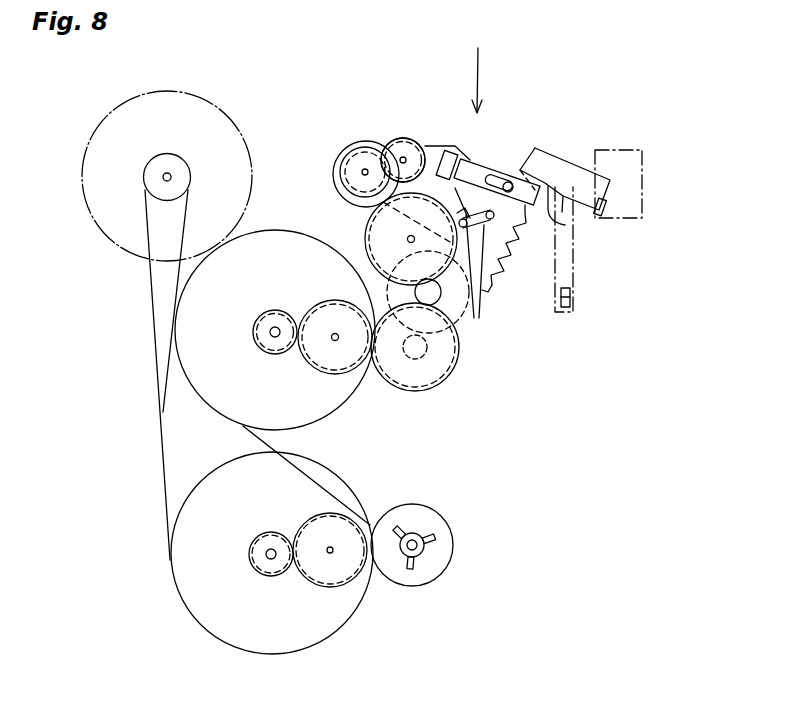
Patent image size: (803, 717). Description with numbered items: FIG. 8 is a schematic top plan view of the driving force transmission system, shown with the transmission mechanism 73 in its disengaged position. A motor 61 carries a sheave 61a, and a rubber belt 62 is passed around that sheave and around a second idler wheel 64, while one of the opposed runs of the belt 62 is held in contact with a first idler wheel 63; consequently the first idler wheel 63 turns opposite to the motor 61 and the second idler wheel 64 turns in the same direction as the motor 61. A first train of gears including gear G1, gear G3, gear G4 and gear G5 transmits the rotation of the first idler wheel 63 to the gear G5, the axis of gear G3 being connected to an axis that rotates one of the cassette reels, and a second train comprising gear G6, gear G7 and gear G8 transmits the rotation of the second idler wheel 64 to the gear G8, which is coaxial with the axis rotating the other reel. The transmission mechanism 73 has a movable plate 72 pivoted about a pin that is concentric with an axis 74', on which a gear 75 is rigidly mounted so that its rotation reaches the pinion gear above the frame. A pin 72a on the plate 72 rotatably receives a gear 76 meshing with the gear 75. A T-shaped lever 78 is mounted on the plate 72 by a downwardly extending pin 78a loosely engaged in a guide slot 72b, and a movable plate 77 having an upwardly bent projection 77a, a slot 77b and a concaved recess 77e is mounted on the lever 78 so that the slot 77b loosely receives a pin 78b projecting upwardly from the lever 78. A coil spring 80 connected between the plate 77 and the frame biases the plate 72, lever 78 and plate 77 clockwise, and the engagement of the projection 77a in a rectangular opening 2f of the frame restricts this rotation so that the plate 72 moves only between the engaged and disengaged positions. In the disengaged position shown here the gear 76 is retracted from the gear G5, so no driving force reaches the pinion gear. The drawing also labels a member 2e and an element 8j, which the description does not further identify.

The motor 61 is at (92, 188).
The sheave 61a is at (167, 166).
The rubber belt 62 is at (157, 383).
The first idler wheel 63 is at (270, 240).
The second idler wheel 64 is at (190, 607).
The gear G1 is at (268, 348).
The gear G3 is at (323, 358).
The gear G4 is at (455, 310).
The gear G5 is at (372, 235).
The gear G6 is at (267, 568).
The gear G7 is at (325, 573).
The gear G8 is at (430, 573).
The movable plate 72 is at (433, 150).
The pin 72a is at (403, 160).
The guide slot 72b is at (485, 292).
The transmission mechanism 73 is at (477, 68).
The axis 74' is at (338, 157).
The gear 75 is at (365, 172).
The gear 76 is at (403, 138).
The movable plate 77 is at (548, 160).
The upwardly bent projection 77a is at (606, 210).
The slot 77b is at (500, 178).
The concaved recess 77e is at (565, 225).
The T-shaped lever 78 is at (478, 163).
The pin 78a is at (494, 282).
The pin 78b is at (510, 172).
The coil spring 80 is at (512, 258).
The chassis member 2e is at (574, 263).
The rectangular opening 2f is at (644, 170).
The stop member 8j is at (571, 298).